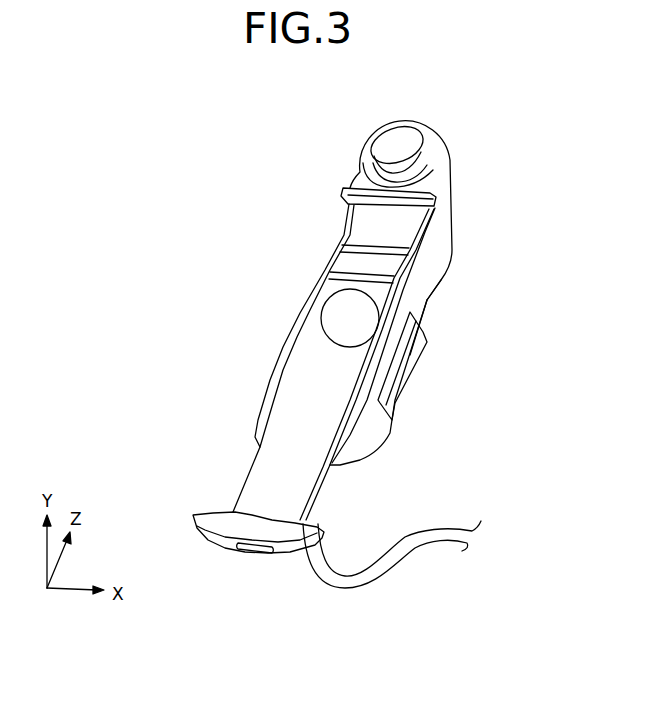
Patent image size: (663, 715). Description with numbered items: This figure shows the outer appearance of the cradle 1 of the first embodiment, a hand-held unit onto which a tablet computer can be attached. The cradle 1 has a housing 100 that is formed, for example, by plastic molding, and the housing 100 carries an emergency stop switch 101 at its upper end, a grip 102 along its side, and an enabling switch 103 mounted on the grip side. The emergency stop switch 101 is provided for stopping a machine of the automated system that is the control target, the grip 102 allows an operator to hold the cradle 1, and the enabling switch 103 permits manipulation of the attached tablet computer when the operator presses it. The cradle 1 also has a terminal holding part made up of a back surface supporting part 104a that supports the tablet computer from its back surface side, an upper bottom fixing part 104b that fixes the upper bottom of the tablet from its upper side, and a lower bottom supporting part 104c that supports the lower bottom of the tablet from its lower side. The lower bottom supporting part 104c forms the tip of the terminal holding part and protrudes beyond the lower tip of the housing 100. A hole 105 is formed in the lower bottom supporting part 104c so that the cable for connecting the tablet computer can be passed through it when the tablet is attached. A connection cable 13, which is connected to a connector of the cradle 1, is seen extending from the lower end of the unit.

The cradle 1 is at (281, 226).
The connection cable 13 is at (394, 562).
The housing 100 is at (302, 317).
The emergency stop switch 101 is at (382, 143).
The grip 102 is at (427, 302).
The enabling switch 103 is at (412, 364).
The back surface supporting part 104a is at (357, 315).
The upper bottom fixing part 104b is at (360, 186).
The lower bottom supporting part 104c is at (280, 538).
The hole 105 is at (250, 557).